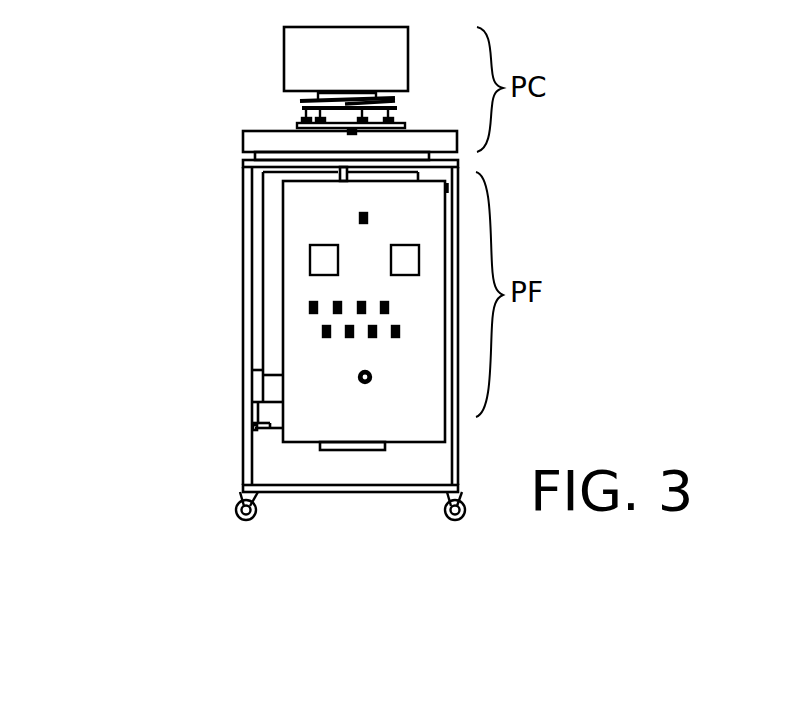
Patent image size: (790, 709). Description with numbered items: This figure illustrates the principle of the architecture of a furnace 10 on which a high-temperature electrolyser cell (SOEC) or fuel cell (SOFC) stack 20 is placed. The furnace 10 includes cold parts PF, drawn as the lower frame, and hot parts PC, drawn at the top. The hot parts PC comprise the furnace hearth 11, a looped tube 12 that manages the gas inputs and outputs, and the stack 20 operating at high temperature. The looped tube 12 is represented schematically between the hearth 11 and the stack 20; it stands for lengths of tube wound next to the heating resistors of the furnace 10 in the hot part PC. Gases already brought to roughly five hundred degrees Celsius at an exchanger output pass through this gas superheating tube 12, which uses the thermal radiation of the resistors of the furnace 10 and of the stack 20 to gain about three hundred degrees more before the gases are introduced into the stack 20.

The furnace 10 is at (142, 130).
The furnace hearth 11 is at (252, 143).
The looped tube 12 is at (302, 97).
The stack 20 is at (300, 52).